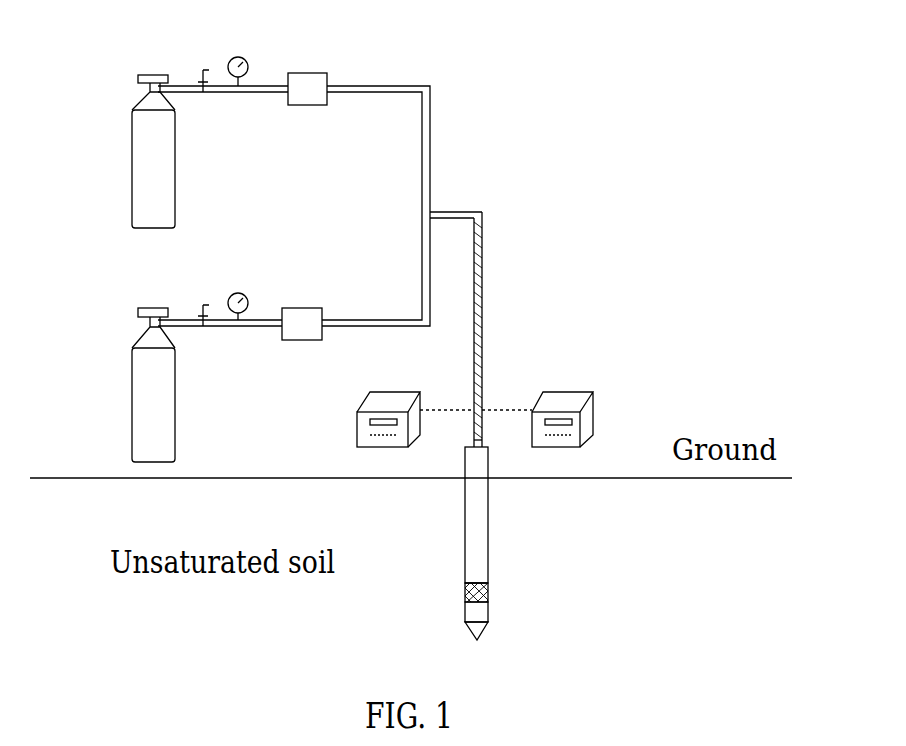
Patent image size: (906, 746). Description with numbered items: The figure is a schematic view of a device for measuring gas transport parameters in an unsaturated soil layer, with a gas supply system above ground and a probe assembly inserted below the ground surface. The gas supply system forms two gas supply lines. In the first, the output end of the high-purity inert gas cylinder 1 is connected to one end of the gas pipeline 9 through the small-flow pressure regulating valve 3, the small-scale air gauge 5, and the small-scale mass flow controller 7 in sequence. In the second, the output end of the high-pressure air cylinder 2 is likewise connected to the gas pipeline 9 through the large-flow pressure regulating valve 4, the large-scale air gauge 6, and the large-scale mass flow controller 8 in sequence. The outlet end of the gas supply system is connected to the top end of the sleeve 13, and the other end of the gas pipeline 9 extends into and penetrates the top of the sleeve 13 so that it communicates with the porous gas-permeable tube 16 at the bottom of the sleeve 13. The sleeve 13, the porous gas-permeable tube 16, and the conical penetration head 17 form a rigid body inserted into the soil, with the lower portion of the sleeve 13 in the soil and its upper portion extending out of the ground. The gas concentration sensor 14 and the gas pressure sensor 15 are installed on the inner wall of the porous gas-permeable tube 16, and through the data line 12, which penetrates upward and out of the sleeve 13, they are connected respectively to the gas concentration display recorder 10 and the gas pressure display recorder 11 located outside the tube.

The high-purity inert gas cylinder 1 is at (132, 110).
The high-pressure air cylinder 2 is at (132, 345).
The small-flow pressure regulating valve 3 is at (203, 70).
The large-flow pressure regulating valve 4 is at (203, 305).
The small-scale air gauge 5 is at (237, 57).
The large-scale air gauge 6 is at (237, 293).
The small-scale mass flow controller 7 is at (320, 73).
The large-scale mass flow controller 8 is at (320, 308).
The gas pipeline 9 is at (482, 212).
The gas concentration display recorder 10 is at (357, 408).
The gas pressure display recorder 11 is at (580, 412).
The data line 12 is at (483, 428).
The sleeve 13 is at (488, 528).
The gas concentration sensor 14 is at (467, 585).
The gas pressure sensor 15 is at (488, 585).
The porous gas-permeable tube 16 is at (465, 600).
The conical penetration head 17 is at (485, 630).